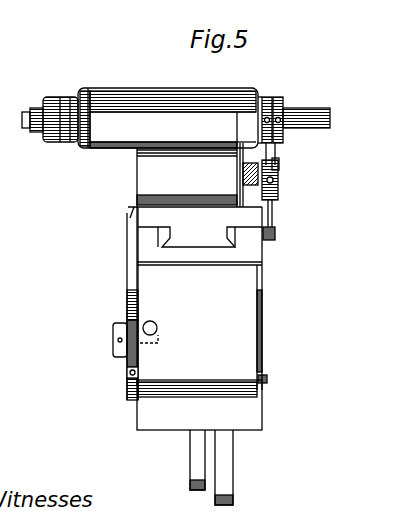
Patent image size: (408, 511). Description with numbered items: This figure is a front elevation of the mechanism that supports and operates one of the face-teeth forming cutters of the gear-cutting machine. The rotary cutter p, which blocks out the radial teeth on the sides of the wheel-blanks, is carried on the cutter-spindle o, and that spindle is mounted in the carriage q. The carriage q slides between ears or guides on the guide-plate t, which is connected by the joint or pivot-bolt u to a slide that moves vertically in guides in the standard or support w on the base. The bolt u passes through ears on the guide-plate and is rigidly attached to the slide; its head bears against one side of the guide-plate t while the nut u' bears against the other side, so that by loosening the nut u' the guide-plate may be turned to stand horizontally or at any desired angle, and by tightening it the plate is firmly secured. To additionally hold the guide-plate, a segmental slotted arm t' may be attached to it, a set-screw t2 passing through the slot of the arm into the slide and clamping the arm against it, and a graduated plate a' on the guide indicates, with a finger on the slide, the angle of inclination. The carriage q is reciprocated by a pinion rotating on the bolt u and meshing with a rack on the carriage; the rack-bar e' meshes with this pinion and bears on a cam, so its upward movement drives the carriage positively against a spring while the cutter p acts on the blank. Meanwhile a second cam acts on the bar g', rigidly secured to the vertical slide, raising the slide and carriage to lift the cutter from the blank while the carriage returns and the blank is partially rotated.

The rotary cutter p is at (32, 110).
The cutter-spindle o is at (58, 98).
The carriage q is at (190, 183).
The pivot-bolt u is at (269, 194).
The nut u' is at (281, 202).
The guide-plate t is at (206, 298).
The segmental slotted arm t' is at (119, 303).
The set-screw t2 is at (113, 342).
The graduated plate a' is at (274, 336).
The standard or support w is at (199, 405).
The rack-bar e' is at (185, 460).
The bar g' is at (226, 467).